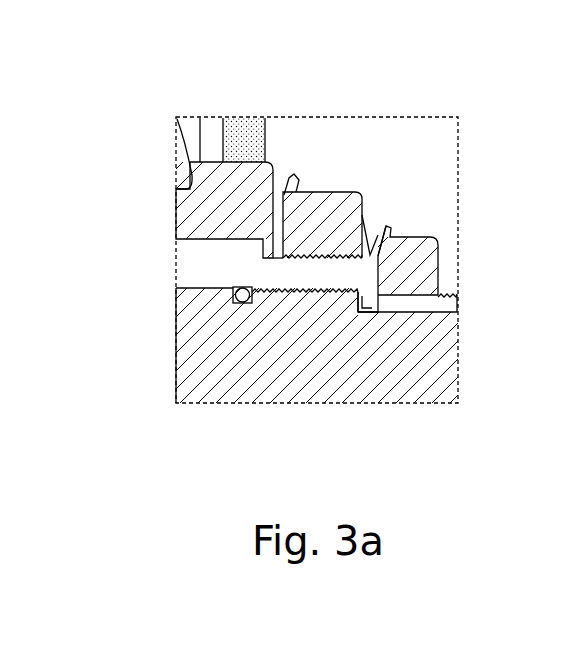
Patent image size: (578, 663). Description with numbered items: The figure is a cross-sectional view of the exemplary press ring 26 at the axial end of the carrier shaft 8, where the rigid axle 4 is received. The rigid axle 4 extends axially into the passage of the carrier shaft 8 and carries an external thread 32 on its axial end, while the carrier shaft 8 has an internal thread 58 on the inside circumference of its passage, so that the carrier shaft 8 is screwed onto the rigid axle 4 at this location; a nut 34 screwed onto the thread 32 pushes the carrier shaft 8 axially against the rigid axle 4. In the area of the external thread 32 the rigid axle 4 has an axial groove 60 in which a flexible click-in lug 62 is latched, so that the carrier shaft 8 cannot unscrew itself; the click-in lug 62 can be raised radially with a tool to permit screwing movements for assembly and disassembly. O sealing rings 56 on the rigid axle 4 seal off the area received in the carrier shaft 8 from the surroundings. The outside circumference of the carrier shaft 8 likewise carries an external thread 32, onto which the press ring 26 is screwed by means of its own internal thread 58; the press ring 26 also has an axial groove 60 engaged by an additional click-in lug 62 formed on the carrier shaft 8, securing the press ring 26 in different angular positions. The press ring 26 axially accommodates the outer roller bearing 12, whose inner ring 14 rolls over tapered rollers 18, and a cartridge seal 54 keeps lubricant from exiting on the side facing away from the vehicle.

The rigid axle 4 is at (212, 338).
The carrier shaft 8 is at (205, 262).
The outer roller bearing 12 is at (144, 176).
The inner ring 14 is at (208, 212).
The tapered rollers 18 is at (170, 148).
The press ring 26 is at (318, 200).
The external thread 32 is at (372, 255).
The nut 34 is at (428, 240).
The cartridge seal 54 is at (234, 130).
The O sealing rings 56 is at (233, 295).
The internal thread 58 is at (303, 293).
The axial groove 60 is at (420, 310).
The click-in lug 62 is at (296, 172).